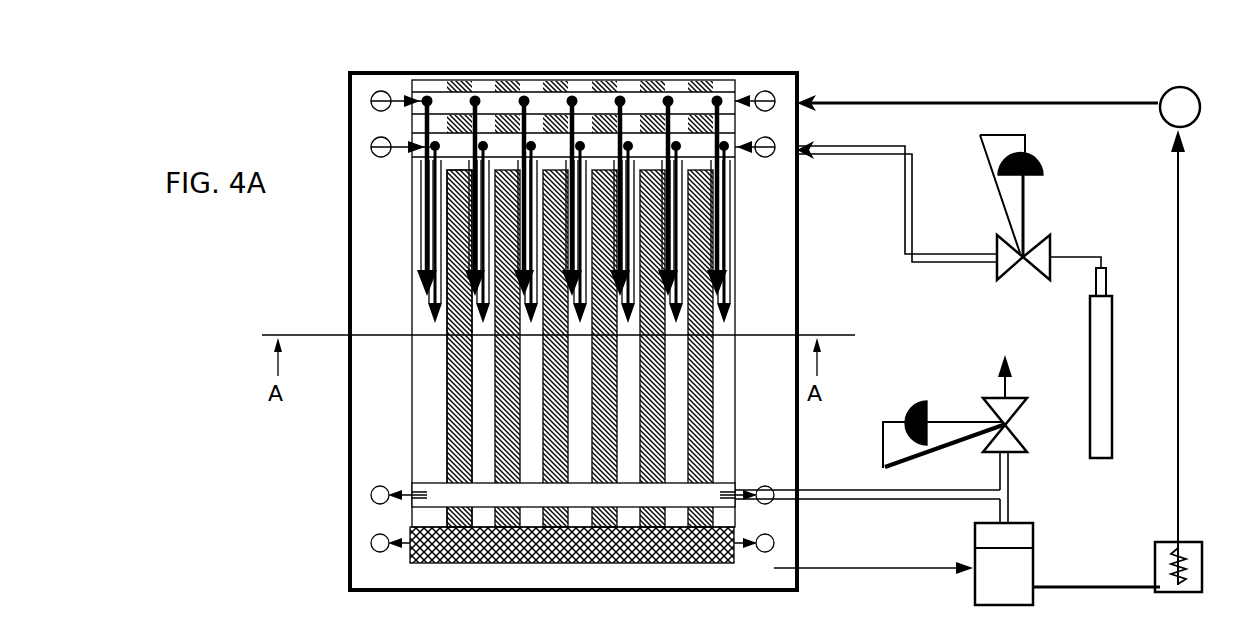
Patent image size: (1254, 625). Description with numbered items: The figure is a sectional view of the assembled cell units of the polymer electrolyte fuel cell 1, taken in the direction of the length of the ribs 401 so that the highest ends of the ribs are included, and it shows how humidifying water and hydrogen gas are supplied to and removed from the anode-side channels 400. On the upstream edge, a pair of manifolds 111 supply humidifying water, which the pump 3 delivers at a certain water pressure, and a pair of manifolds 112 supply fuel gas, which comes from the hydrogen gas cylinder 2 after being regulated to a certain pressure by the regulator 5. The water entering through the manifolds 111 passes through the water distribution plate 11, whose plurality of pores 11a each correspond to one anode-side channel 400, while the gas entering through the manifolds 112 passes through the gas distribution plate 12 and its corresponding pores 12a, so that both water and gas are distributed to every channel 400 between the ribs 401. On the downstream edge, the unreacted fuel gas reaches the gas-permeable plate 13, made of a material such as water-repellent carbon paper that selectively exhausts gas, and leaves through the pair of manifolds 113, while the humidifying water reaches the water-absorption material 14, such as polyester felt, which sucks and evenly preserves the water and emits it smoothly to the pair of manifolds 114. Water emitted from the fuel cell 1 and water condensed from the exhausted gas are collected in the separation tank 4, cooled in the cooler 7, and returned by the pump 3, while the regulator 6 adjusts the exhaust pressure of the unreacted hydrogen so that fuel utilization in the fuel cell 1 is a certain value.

The fuel cell 1 is at (650, 54).
The hydrogen gas cylinder 2 is at (1090, 366).
The pump 3 is at (1200, 93).
The separation tank 4 is at (1035, 552).
The regulator 5 is at (1000, 276).
The regulator 6 is at (976, 392).
The cooler 7 is at (1200, 540).
The water distribution plate 11 is at (458, 90).
The pores 11a is at (527, 90).
The gas distribution plate 12 is at (594, 126).
The second header 12a is at (672, 138).
The gas-permeable plate 13 is at (412, 488).
The water-absorption material 14 is at (655, 565).
The manifolds 111 is at (383, 90).
The manifolds 112 is at (382, 158).
The manifolds 113 is at (381, 485).
The manifolds 114 is at (382, 556).
The anode-side channels 400 is at (472, 405).
The ribs 401 is at (443, 427).